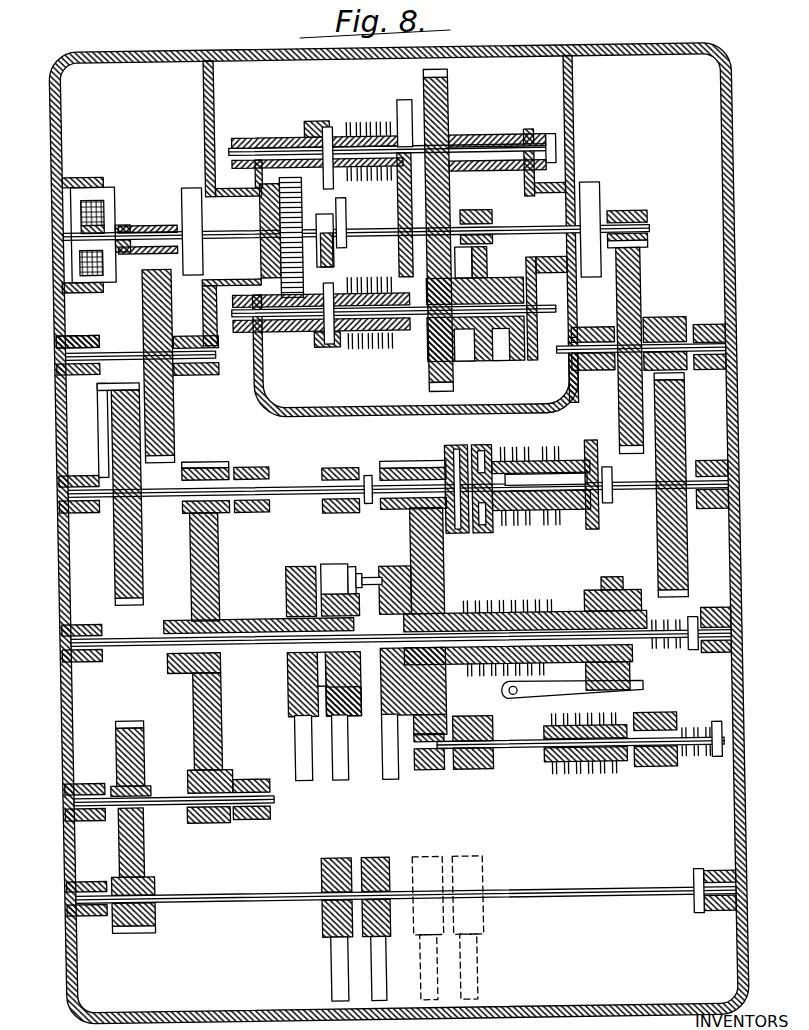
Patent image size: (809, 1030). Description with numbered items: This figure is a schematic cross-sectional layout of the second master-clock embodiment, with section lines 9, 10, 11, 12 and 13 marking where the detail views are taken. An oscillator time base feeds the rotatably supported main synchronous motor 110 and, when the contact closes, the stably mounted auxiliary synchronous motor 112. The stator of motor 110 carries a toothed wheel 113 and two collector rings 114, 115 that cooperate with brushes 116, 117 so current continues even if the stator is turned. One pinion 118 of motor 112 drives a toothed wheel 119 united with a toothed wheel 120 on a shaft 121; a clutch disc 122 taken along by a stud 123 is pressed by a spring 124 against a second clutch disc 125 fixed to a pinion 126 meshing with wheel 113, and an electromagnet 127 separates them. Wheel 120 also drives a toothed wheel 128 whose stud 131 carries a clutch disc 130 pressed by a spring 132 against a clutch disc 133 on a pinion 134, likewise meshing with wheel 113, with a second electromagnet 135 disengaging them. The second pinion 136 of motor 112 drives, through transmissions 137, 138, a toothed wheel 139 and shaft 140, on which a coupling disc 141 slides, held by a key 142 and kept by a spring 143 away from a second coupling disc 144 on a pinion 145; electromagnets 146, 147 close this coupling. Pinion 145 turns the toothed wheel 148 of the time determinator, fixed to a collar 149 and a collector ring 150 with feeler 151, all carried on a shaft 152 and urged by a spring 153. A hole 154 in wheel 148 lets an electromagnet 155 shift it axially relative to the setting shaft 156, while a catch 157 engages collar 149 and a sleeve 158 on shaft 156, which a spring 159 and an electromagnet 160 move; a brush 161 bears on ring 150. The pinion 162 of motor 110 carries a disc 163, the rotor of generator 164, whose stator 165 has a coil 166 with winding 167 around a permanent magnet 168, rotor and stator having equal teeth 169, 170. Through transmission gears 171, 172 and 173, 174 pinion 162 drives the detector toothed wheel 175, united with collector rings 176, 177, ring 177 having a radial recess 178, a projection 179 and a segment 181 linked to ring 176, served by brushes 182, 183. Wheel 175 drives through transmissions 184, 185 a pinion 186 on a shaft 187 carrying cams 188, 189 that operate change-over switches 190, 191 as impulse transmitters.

The section line 9— 9 is at (114, 174).
The section line 10— 10 is at (134, 176).
The section line 11— 11 is at (355, 795).
The section line 12— 12 is at (331, 999).
The section line 13— 13 is at (375, 999).
The main synchronous motor 110 is at (200, 184).
The auxiliary synchronous motor 112 is at (596, 193).
The toothed wheel 113 is at (288, 204).
The collector ring 114 is at (308, 220).
The collector ring 115 is at (345, 247).
The brush 116 is at (333, 263).
The brush 117 is at (350, 223).
The pinion 118 is at (483, 211).
The toothed wheel 119 is at (486, 371).
The toothed wheel 120 is at (455, 386).
The shaft 121 is at (555, 152).
The clutch disc 122 is at (336, 347).
The stud 123 is at (408, 258).
The spring 124 is at (427, 275).
The second clutch disc 125 is at (333, 349).
The pinion 126 is at (314, 333).
The electromagnet 127 is at (373, 347).
The toothed wheel 128 is at (455, 99).
The clutch disc 130 is at (340, 123).
The stud 131 is at (423, 108).
The spring 132 is at (454, 139).
The second clutch disc 133 is at (318, 123).
The pinion 134 is at (286, 122).
The second electromagnet 135 is at (365, 120).
The second pinion 136 is at (646, 215).
The transmission 137 is at (645, 279).
The transmission 138 is at (682, 322).
The toothed wheel 139 is at (660, 411).
The shaft 140 is at (633, 493).
The coupling disc 141 is at (490, 448).
The key 142 is at (531, 482).
The spring 143 is at (482, 528).
The second coupling disc 144 is at (457, 437).
The pinion 145 is at (383, 467).
The electromagnet 146 is at (527, 529).
The electromagnet 147 is at (575, 530).
The toothed wheel 148 is at (431, 568).
The collar 149 is at (617, 575).
The collector ring 150 is at (374, 708).
The feeler 151 is at (390, 558).
The shaft 152 is at (723, 635).
The spring 153 is at (645, 644).
The hole 154 is at (428, 771).
The electromagnet 155 is at (512, 599).
The setting shaft 156 is at (516, 749).
The catch 157 is at (501, 705).
The sleeve 158 is at (535, 764).
The spring 159 is at (683, 757).
The electromagnet 160 is at (594, 773).
The brush 161 is at (391, 778).
The pinion 162 is at (164, 229).
The disc 163 is at (75, 246).
The generator 164 is at (64, 320).
The stator 165 is at (68, 183).
The coil 166 is at (78, 205).
The winding 167 is at (82, 219).
The permanent magnet 168 is at (83, 233).
The teeth 169 is at (132, 209).
The teeth 170 is at (136, 218).
The transmission gear 171 is at (158, 311).
The transmission gear 172 is at (105, 383).
The transmission gear 173 is at (112, 561).
The transmission gear 174 is at (209, 467).
The toothed wheel 175 is at (216, 557).
The collector ring 176 is at (294, 698).
The collector ring 177 is at (320, 607).
The radial recess 178 is at (327, 581).
The projection 179 is at (306, 719).
The segment 181 is at (346, 572).
The brush 182 is at (332, 778).
The second brush 183 is at (297, 781).
The transmission 184 is at (201, 820).
The transmission 185 is at (147, 704).
The pinion 186 is at (129, 928).
The shaft 187 is at (205, 902).
The cam 188 is at (316, 870).
The cam 189 is at (391, 880).
The change-over switch 190 is at (321, 970).
The change-over switch 191 is at (372, 970).